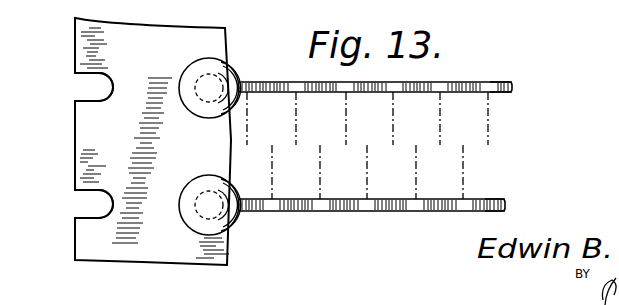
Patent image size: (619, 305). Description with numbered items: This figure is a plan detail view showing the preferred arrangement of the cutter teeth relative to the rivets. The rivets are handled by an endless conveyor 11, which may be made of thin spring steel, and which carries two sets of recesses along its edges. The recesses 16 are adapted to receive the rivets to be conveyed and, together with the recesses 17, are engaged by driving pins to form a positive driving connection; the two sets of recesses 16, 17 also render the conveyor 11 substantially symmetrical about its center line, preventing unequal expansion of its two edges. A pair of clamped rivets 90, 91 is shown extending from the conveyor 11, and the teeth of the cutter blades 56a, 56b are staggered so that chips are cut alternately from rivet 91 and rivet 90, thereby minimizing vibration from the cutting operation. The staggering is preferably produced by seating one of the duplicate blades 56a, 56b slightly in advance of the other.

The endless conveyor 11 is at (153, 141).
The conveyor recess 17 is at (82, 78).
The conveyor recess 16 is at (221, 67).
The clamped rivet 91 is at (237, 80).
The clamped rivet 90 is at (236, 216).
The cutter blade 56a is at (512, 85).
The cutter blade 56b is at (494, 198).